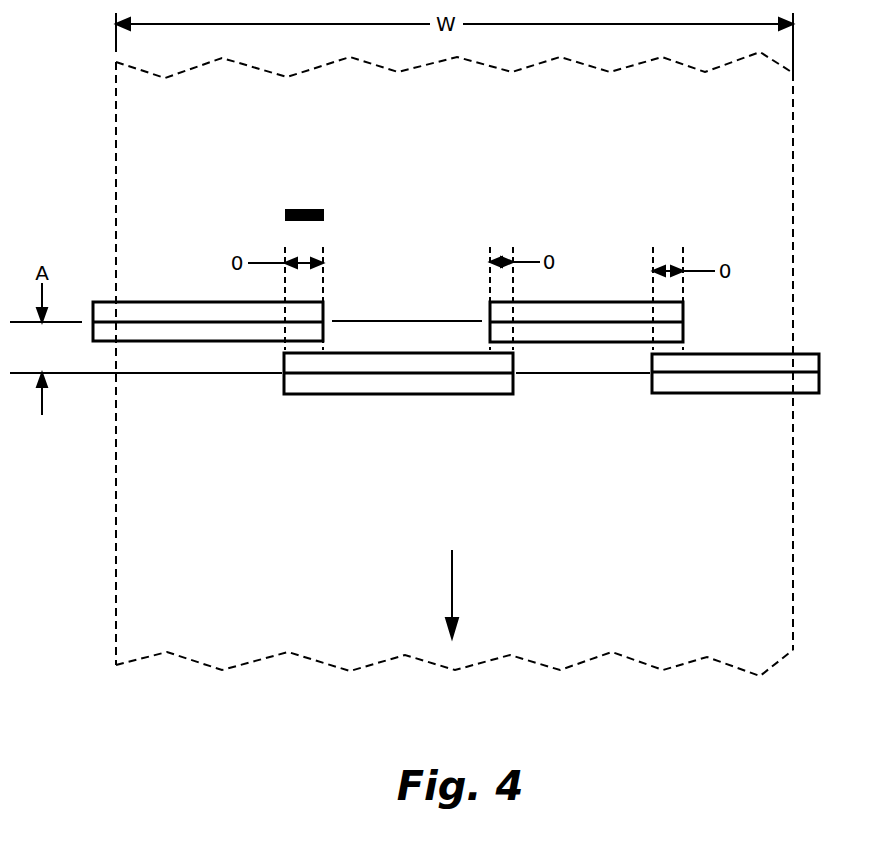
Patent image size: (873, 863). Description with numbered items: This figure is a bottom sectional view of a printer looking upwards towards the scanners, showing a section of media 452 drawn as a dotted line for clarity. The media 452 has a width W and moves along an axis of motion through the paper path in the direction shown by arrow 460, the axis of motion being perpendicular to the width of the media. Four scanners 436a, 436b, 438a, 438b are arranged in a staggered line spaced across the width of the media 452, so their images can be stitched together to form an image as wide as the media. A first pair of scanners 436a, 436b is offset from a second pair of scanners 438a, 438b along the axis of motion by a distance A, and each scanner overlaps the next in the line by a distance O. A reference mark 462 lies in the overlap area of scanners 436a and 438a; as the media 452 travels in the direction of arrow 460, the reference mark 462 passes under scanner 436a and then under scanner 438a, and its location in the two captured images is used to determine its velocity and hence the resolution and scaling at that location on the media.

The media 452 is at (473, 137).
The reference mark 462 is at (305, 209).
The first scanner 436a is at (193, 302).
The scanner 436b is at (595, 302).
The second scanner 438a is at (413, 394).
The scanner 438b is at (730, 396).
The arrow 460 is at (455, 580).